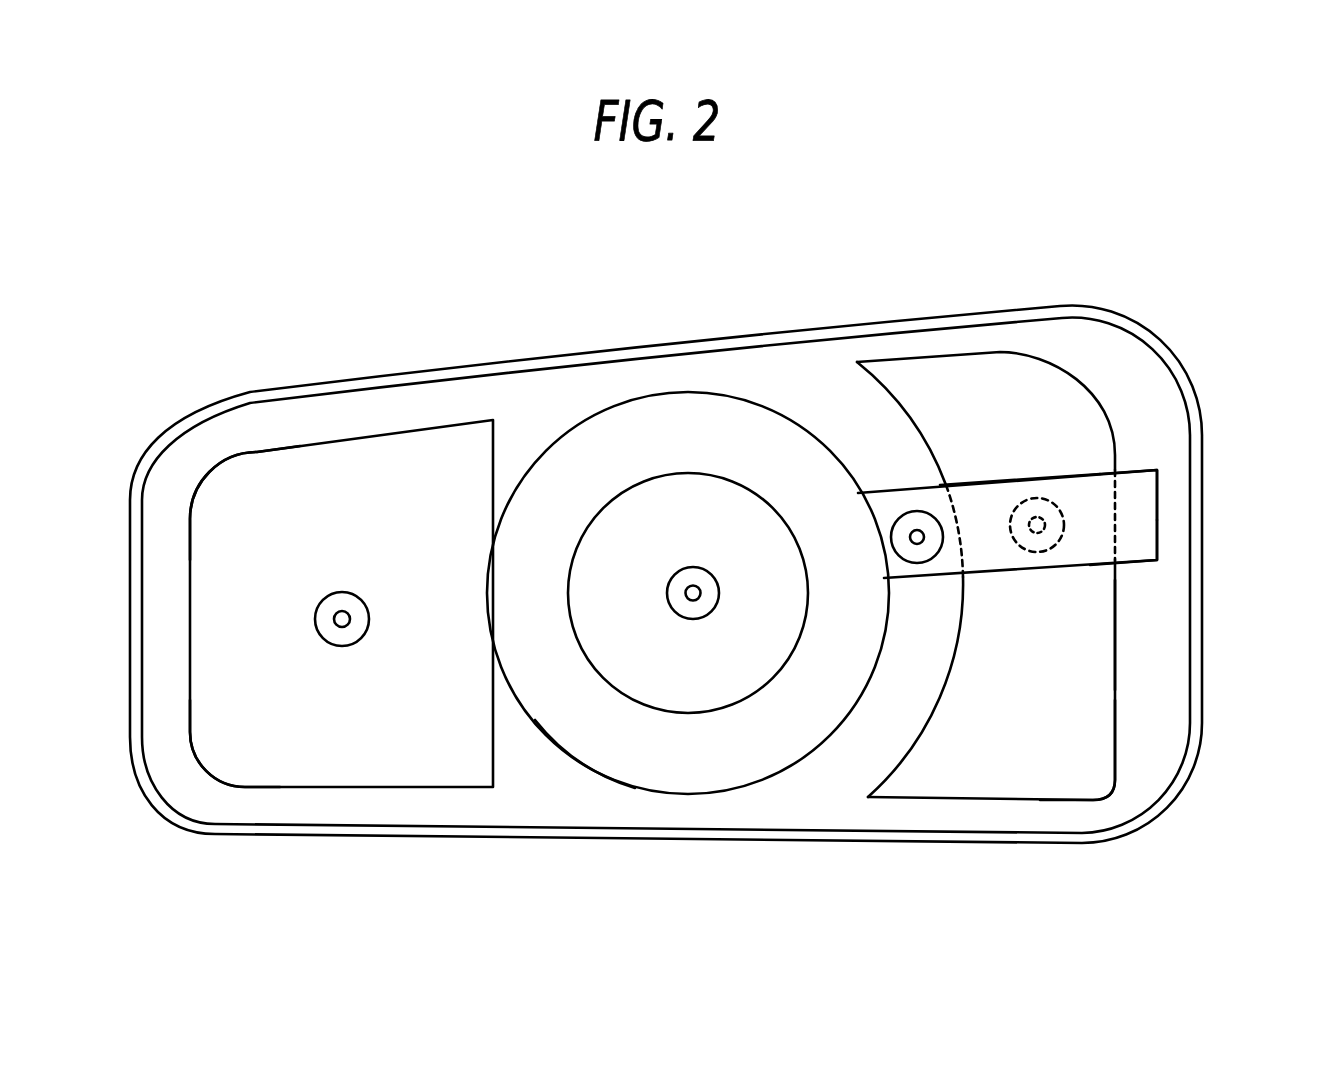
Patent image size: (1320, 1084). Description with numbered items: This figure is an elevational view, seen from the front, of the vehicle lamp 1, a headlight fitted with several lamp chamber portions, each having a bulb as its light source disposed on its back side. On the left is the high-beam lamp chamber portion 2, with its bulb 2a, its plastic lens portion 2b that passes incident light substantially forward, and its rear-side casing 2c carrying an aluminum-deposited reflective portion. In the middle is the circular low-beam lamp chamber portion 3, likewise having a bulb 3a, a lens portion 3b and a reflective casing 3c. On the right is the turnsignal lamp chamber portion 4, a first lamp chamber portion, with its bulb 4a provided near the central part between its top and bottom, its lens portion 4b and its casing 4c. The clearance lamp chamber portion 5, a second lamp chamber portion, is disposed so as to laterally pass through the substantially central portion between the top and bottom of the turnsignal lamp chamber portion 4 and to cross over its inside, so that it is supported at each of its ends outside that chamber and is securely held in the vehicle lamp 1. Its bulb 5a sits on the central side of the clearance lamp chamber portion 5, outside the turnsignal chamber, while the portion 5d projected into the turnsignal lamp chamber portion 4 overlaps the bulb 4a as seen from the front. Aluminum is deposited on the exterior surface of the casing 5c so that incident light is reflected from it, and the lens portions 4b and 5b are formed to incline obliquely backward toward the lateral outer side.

The vehicle lamp 1 is at (1175, 280).
The high-beam lamp chamber portion 2 is at (415, 457).
The bulb 2a is at (342, 624).
The lens portion 2b is at (203, 765).
The casing 2c is at (265, 500).
The low-beam lamp chamber portion 3 is at (715, 415).
The bulb 3a is at (693, 605).
The lens portion 3b is at (585, 763).
The casing 3c is at (657, 520).
The turnsignal lamp chamber portion 4 is at (1017, 780).
The bulb 4a is at (1048, 497).
The lens portion 4b is at (1113, 733).
The casing 4c is at (1103, 617).
The clearance lamp chamber portion 5 is at (893, 507).
The bulb 5a is at (919, 533).
The lens portion 5b is at (1142, 469).
The casing 5c is at (1103, 521).
The portion 5d is at (1003, 480).